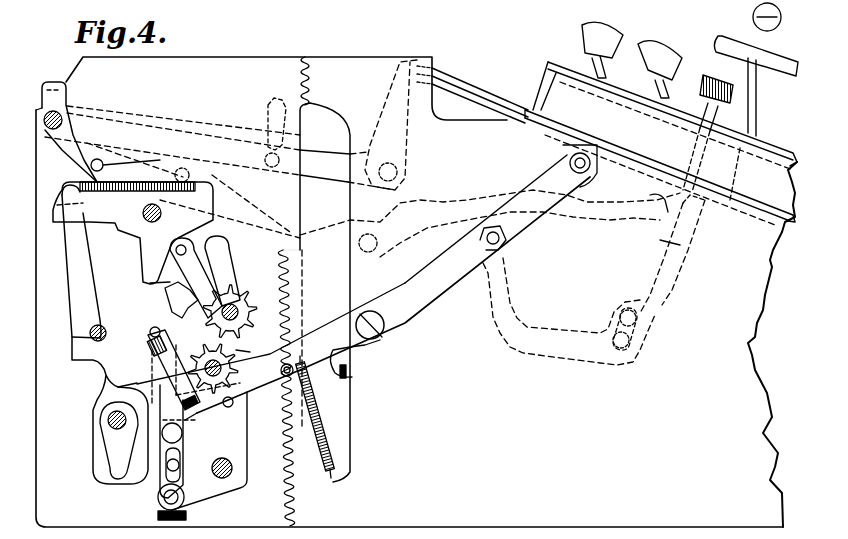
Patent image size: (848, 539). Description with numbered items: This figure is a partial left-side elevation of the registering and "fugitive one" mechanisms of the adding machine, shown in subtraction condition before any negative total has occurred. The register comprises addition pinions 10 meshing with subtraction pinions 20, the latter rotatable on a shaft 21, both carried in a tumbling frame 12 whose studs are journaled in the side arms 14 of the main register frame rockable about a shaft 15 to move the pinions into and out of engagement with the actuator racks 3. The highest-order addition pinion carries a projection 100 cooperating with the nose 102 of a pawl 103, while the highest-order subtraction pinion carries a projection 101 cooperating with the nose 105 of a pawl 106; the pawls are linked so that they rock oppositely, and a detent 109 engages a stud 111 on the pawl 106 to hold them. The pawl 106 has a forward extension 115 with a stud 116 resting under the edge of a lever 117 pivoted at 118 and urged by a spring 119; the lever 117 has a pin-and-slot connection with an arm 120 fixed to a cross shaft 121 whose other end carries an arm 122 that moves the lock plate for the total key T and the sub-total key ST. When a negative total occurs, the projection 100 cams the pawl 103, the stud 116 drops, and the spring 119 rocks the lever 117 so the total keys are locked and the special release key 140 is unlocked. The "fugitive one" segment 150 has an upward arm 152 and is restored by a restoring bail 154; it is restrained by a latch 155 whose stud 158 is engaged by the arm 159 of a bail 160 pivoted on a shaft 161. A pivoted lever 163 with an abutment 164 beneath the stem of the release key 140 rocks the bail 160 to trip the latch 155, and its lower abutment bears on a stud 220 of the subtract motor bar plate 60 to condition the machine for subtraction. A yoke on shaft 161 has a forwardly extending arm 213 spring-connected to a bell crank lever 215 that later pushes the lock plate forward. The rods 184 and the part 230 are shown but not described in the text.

The bail 160 is at (55, 82).
The shaft 161 is at (46, 124).
The stud 158 is at (118, 163).
The arm 159 is at (80, 186).
The forwardly extending arm 213 is at (226, 130).
The bell crank lever 215 is at (327, 160).
The subtraction pinions 20 is at (276, 292).
The actuator racks 3 is at (284, 251).
The latch 155 is at (200, 226).
The upwardly extending arm 152 is at (78, 287).
The detent 109 is at (101, 318).
The restoring bail 154 is at (110, 421).
The tumbling frame 12 is at (223, 276).
The projection 101 is at (204, 296).
The shaft 21 is at (229, 311).
The projection 100 is at (210, 362).
The fugitive 1 segment 150 is at (168, 299).
The nose 105 is at (162, 283).
The stud 111 is at (150, 332).
The pawl 106 is at (153, 346).
The nose 102 is at (158, 366).
The pawl 103 is at (158, 487).
The side arms of main register frame 14 is at (239, 443).
The shaft 15 is at (233, 468).
The addition pinions 10 is at (250, 352).
The forward extension 115 is at (258, 400).
The stud 116 is at (288, 378).
The spring 119 is at (330, 408).
The lever 117 is at (427, 300).
The shaft 121 is at (570, 162).
The arm 120 is at (518, 222).
The pivot 118 is at (380, 340).
The rods 184 is at (490, 100).
The rod 230 is at (482, 112).
The arm 122 is at (593, 128).
The sub-total key ST is at (602, 40).
The total key T is at (662, 55).
The special release key 140 is at (718, 88).
The subtract motor bar plate 60 is at (750, 116).
The pivoted lever 163 is at (418, 205).
The abutment 164 is at (652, 195).
The stud 220 is at (660, 246).